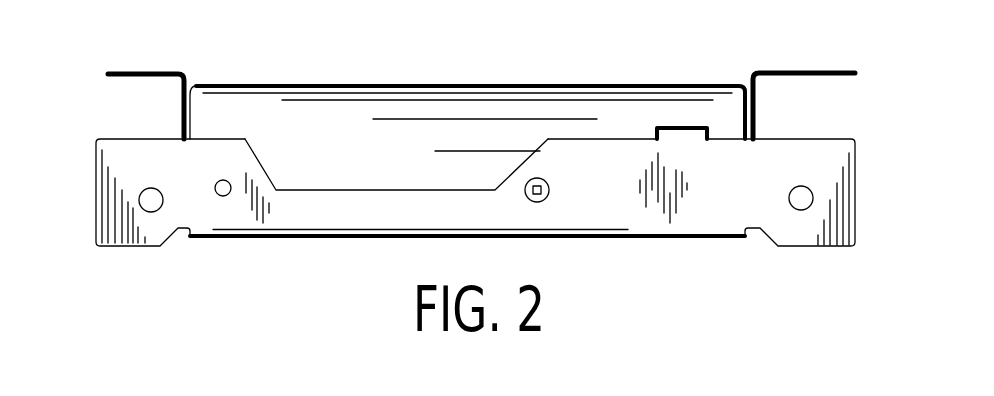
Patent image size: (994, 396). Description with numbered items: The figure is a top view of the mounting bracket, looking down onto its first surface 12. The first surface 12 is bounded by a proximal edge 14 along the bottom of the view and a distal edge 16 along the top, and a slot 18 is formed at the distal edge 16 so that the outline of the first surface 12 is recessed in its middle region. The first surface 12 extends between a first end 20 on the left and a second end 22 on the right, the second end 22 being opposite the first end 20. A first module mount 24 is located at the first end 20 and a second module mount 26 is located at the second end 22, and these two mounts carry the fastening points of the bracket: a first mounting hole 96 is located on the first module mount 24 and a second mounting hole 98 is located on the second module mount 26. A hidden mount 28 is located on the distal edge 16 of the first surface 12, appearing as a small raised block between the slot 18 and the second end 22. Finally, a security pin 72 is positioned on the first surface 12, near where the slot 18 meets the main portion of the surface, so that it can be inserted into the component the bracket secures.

The first surface 12 is at (757, 204).
The proximal edge 14 is at (351, 241).
The distal edge 16 is at (608, 137).
The slot 18 is at (356, 178).
The first end 20 is at (89, 200).
The second end 22 is at (862, 198).
The first module mount 24 is at (113, 163).
The second module mount 26 is at (842, 170).
The hidden mount 28 is at (685, 126).
The security pin 72 is at (537, 178).
The first mounting hole 96 is at (152, 196).
The second mounting hole 98 is at (797, 195).